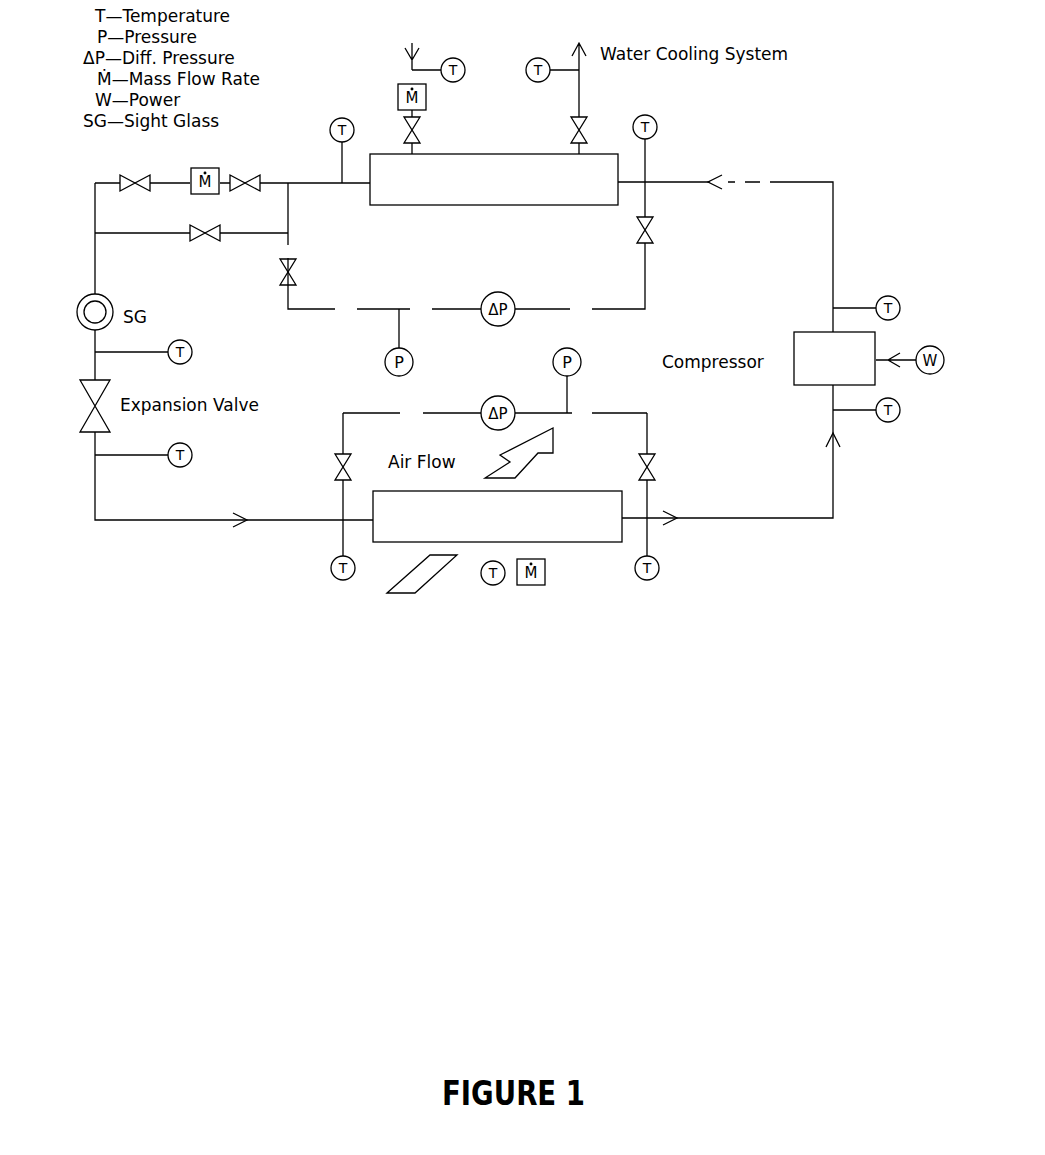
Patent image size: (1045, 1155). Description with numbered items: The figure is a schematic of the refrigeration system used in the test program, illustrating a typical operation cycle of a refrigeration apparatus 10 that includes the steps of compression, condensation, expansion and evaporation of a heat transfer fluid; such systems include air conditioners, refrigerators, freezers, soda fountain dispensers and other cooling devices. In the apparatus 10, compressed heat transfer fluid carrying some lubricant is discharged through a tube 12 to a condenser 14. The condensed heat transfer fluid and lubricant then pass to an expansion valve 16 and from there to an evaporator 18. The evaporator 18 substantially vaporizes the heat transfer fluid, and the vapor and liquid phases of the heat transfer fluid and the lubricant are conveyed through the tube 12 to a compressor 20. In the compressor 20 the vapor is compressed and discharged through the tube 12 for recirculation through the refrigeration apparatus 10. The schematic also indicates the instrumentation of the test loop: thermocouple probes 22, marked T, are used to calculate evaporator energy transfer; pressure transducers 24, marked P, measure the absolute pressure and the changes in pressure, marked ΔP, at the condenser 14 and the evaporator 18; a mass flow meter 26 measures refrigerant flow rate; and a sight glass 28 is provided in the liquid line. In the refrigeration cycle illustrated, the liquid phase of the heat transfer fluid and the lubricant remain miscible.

The refrigeration apparatus 10 is at (843, 187).
The tube 12 is at (770, 182).
The condenser 14 is at (472, 153).
The expansion valve 16 is at (82, 402).
The evaporator 18 is at (565, 543).
The compressor 20 is at (805, 386).
The thermocouple probes 22 is at (657, 125).
The pressure transducers 24 is at (581, 357).
The mass flow meter 26 is at (533, 586).
The sight glass 28 is at (78, 312).